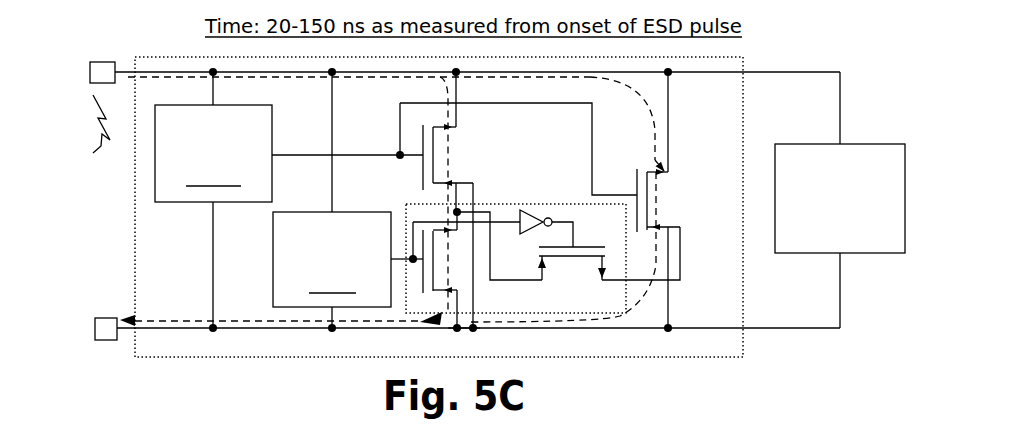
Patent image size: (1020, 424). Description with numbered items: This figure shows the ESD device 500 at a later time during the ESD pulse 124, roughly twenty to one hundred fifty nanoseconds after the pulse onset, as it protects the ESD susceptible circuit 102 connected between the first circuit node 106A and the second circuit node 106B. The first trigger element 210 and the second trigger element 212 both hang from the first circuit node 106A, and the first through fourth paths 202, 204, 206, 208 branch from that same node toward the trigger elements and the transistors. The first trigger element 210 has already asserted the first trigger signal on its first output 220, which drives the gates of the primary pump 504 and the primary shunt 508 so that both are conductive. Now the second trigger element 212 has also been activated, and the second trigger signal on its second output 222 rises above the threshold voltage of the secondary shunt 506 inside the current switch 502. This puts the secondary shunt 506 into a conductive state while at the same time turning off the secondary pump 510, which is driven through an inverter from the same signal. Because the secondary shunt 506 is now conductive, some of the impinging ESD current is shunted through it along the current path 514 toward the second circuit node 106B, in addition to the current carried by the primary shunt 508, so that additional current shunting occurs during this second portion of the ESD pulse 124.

The first circuit node 106A is at (102, 63).
The second circuit node 106B is at (106, 320).
The ESD pulse 124 is at (93, 153).
The ESD susceptible circuit 102 is at (826, 247).
The first path 202 is at (223, 96).
The second path 204 is at (339, 97).
The third path 206 is at (677, 97).
The fourth path 208 is at (464, 97).
The first trigger element 210 is at (200, 167).
The second trigger element 212 is at (319, 274).
The first output 220 is at (276, 153).
The second output 222 is at (392, 253).
The ESD device 500 is at (745, 107).
The current switch 502 is at (513, 203).
The primary pump 504 is at (464, 137).
The secondary shunt 506 is at (464, 292).
The primary shunt 508 is at (679, 182).
The secondary pump 510 is at (571, 291).
The current path 514 is at (455, 333).